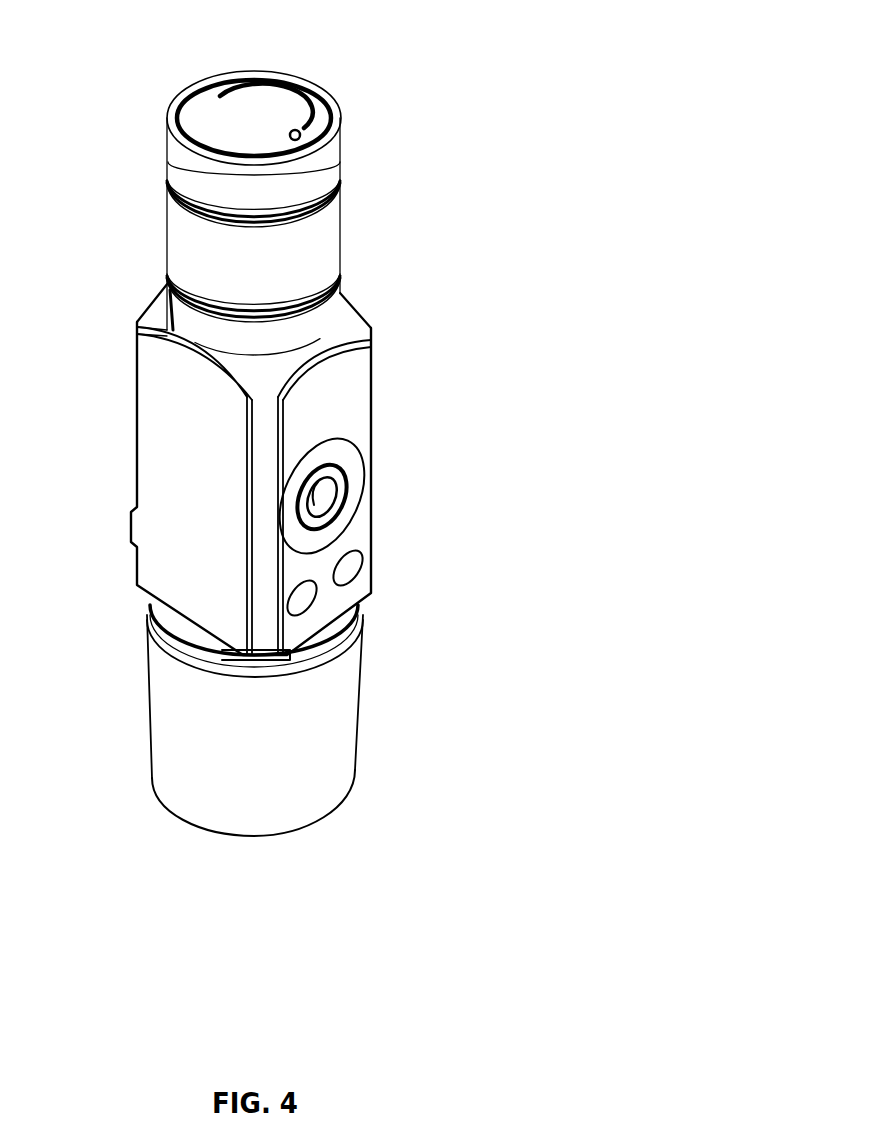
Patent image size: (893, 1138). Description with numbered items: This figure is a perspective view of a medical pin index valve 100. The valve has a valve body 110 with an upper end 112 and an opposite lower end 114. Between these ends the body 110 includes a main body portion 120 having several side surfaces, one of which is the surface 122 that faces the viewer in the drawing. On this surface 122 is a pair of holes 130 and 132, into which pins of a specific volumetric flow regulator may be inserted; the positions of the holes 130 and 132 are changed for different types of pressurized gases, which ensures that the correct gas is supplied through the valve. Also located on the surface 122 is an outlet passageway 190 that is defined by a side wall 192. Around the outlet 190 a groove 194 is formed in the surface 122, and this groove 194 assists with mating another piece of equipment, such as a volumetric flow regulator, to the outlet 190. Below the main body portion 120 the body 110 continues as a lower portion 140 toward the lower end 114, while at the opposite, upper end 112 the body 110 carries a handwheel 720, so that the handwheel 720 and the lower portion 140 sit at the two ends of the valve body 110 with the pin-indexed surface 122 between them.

The medical pin index valve 100 is at (433, 145).
The handwheel 720 is at (218, 116).
The valve body 110 is at (136, 490).
The upper end 112 is at (153, 317).
The lower end 114 is at (215, 834).
The main body portion 120 is at (163, 448).
The side surface 122 is at (342, 380).
The hole 130 is at (303, 600).
The hole 132 is at (350, 568).
The lower portion 140 is at (192, 735).
The outlet passageway 190 is at (325, 495).
The side wall 192 is at (331, 483).
The groove 194 is at (356, 447).